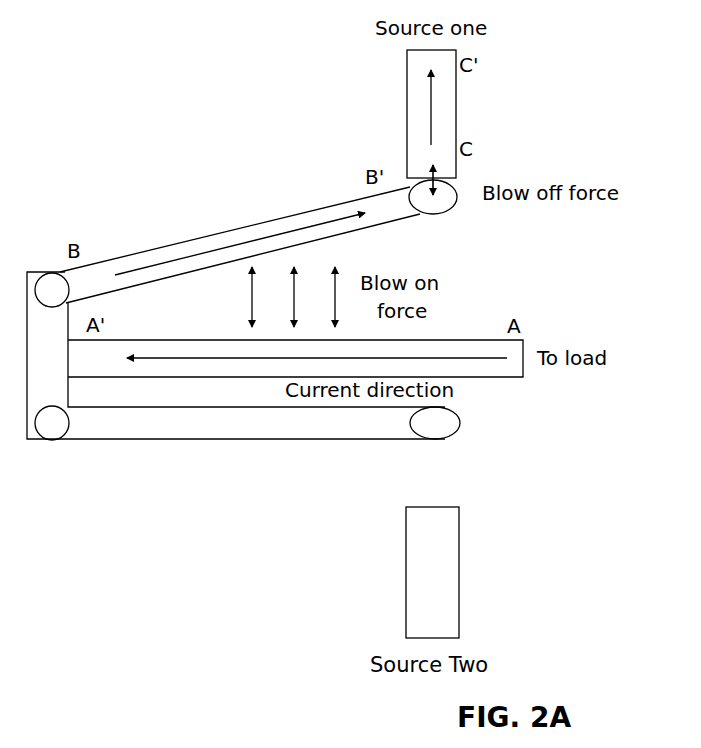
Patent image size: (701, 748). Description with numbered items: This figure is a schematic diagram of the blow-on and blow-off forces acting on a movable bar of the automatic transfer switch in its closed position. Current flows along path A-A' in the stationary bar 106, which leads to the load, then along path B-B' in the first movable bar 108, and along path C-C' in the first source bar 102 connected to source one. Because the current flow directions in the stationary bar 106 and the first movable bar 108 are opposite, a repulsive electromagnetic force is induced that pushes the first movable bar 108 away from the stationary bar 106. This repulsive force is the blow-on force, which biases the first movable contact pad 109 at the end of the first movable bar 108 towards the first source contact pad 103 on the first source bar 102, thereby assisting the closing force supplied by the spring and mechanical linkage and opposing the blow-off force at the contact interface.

The first source bar 102 is at (456, 100).
The first source contact pad 103 is at (457, 176).
The stationary bar 106 is at (527, 342).
The first movable bar 108 is at (235, 229).
The first movable contact pad 109 is at (437, 214).